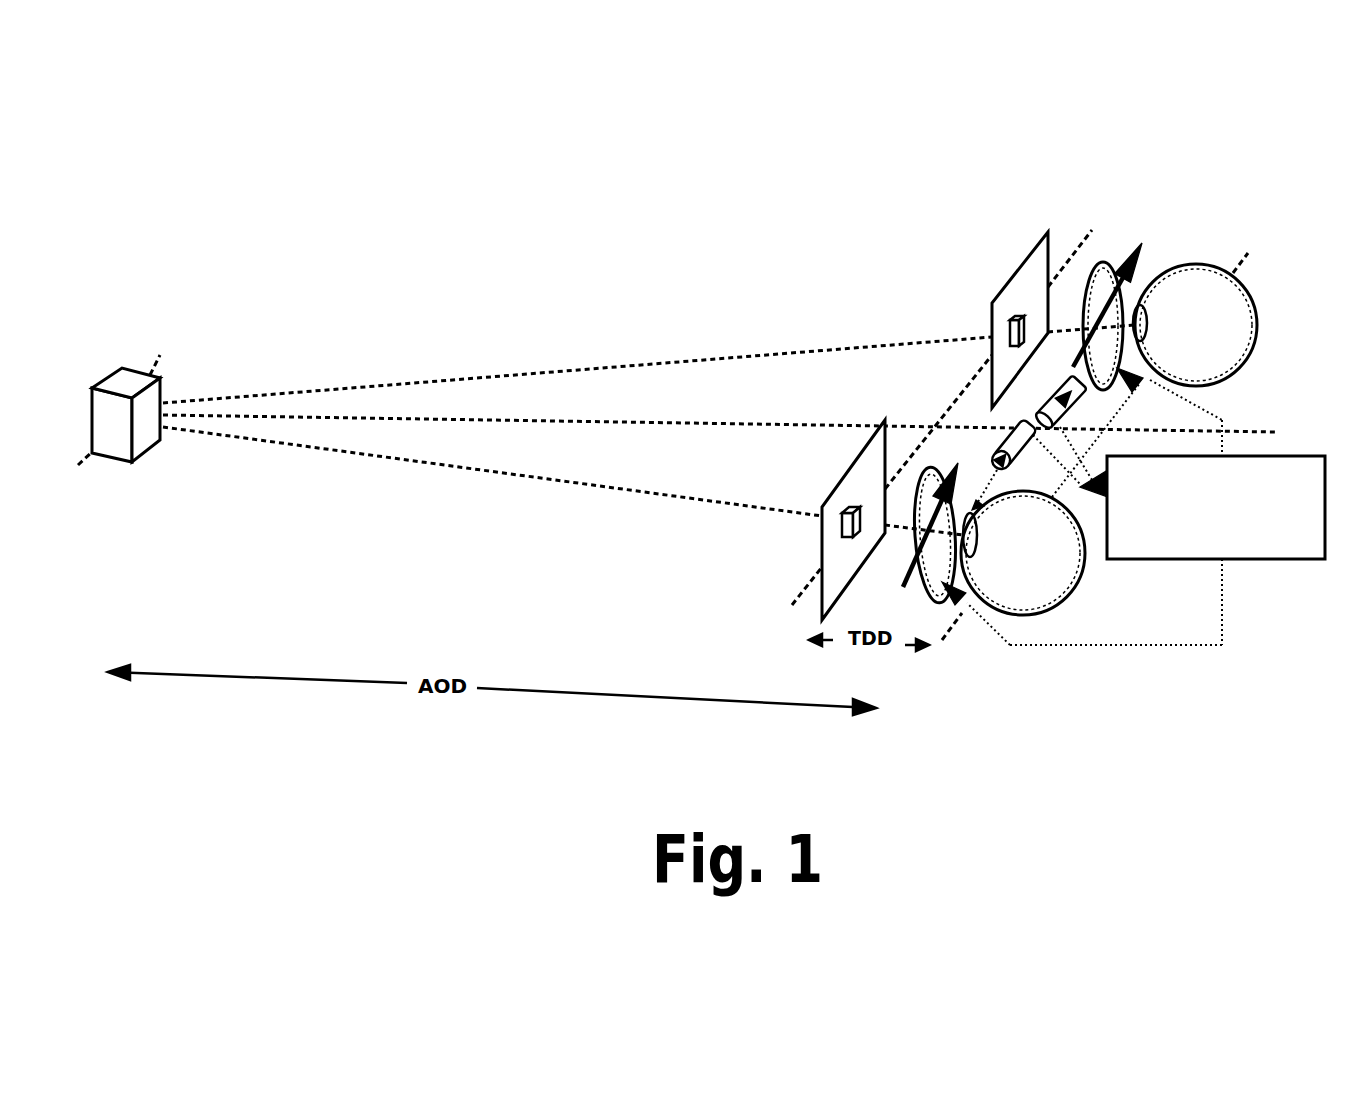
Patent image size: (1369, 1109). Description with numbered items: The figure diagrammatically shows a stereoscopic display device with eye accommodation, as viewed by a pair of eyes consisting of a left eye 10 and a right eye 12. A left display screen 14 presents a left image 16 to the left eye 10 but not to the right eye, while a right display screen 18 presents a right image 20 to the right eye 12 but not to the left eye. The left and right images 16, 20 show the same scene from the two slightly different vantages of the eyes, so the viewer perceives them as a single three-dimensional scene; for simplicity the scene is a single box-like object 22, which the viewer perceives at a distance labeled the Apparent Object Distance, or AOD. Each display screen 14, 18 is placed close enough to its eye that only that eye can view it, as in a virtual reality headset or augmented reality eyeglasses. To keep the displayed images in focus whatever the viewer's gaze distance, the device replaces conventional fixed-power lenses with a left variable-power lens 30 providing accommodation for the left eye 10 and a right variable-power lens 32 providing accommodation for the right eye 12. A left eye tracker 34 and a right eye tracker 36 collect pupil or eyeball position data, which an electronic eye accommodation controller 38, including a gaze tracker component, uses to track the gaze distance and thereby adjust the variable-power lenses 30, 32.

The left eye 10 is at (1045, 576).
The right eye 12 is at (1218, 346).
The left display screen 14 is at (832, 493).
The left image 16 is at (860, 530).
The right display screen 18 is at (1023, 263).
The right image 20 is at (1023, 333).
The box-like object 22 is at (148, 400).
The left variable-power lens 30 is at (940, 582).
The right variable-power lens 32 is at (1103, 262).
The left eye tracker 34 is at (1007, 442).
The right eye tracker 36 is at (1040, 398).
The electronic eye accommodation controller 38 is at (1258, 561).